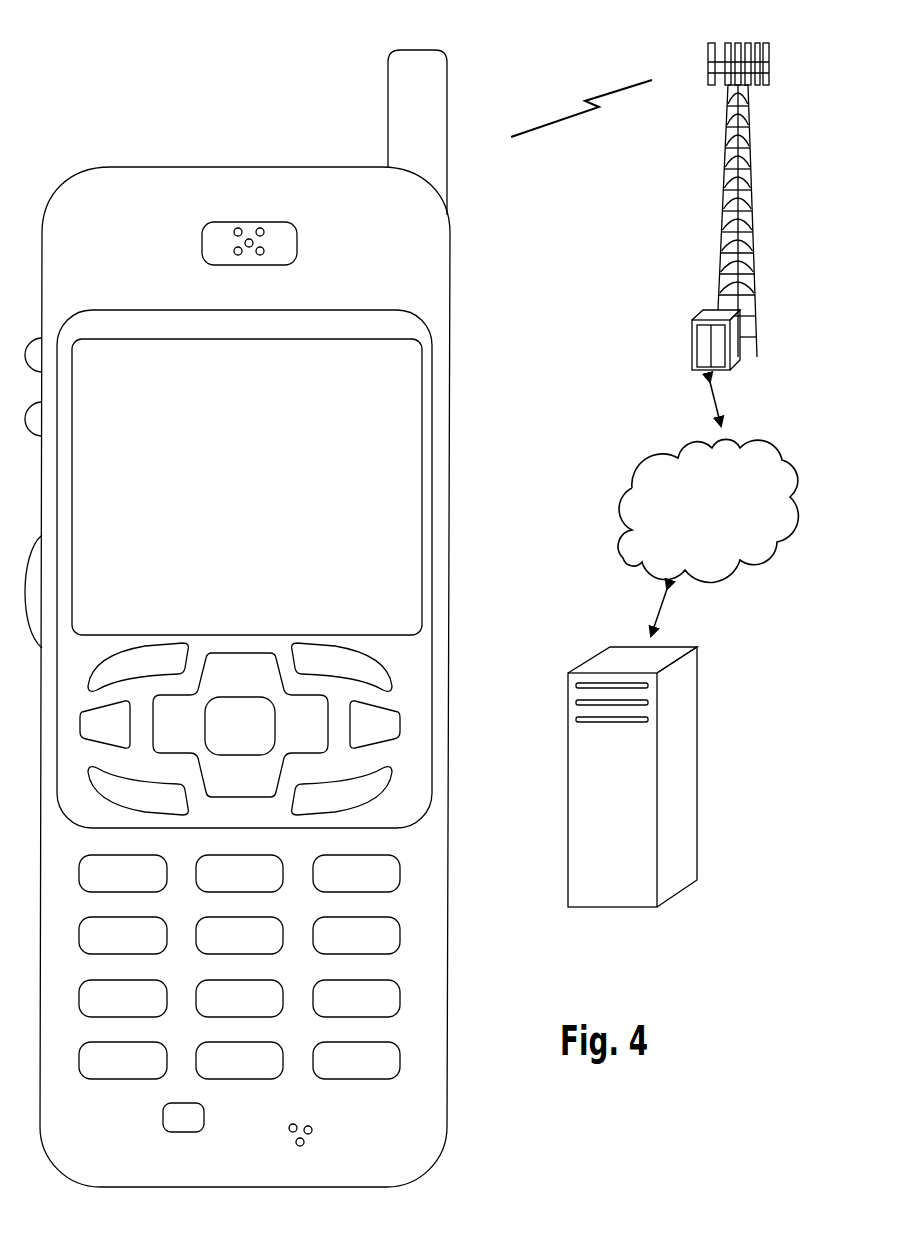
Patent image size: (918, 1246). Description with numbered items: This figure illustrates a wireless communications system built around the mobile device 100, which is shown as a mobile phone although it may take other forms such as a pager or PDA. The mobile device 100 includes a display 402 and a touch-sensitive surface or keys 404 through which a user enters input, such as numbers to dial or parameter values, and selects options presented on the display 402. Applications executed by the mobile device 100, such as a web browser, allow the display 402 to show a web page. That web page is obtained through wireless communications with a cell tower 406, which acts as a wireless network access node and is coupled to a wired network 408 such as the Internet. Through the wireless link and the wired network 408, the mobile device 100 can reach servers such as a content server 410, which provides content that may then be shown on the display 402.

The mobile device 100 is at (80, 1184).
The display 402 is at (432, 352).
The keys 404 is at (446, 646).
The cell tower 406 is at (723, 221).
The wired network 408 is at (628, 555).
The content server 410 is at (606, 907).